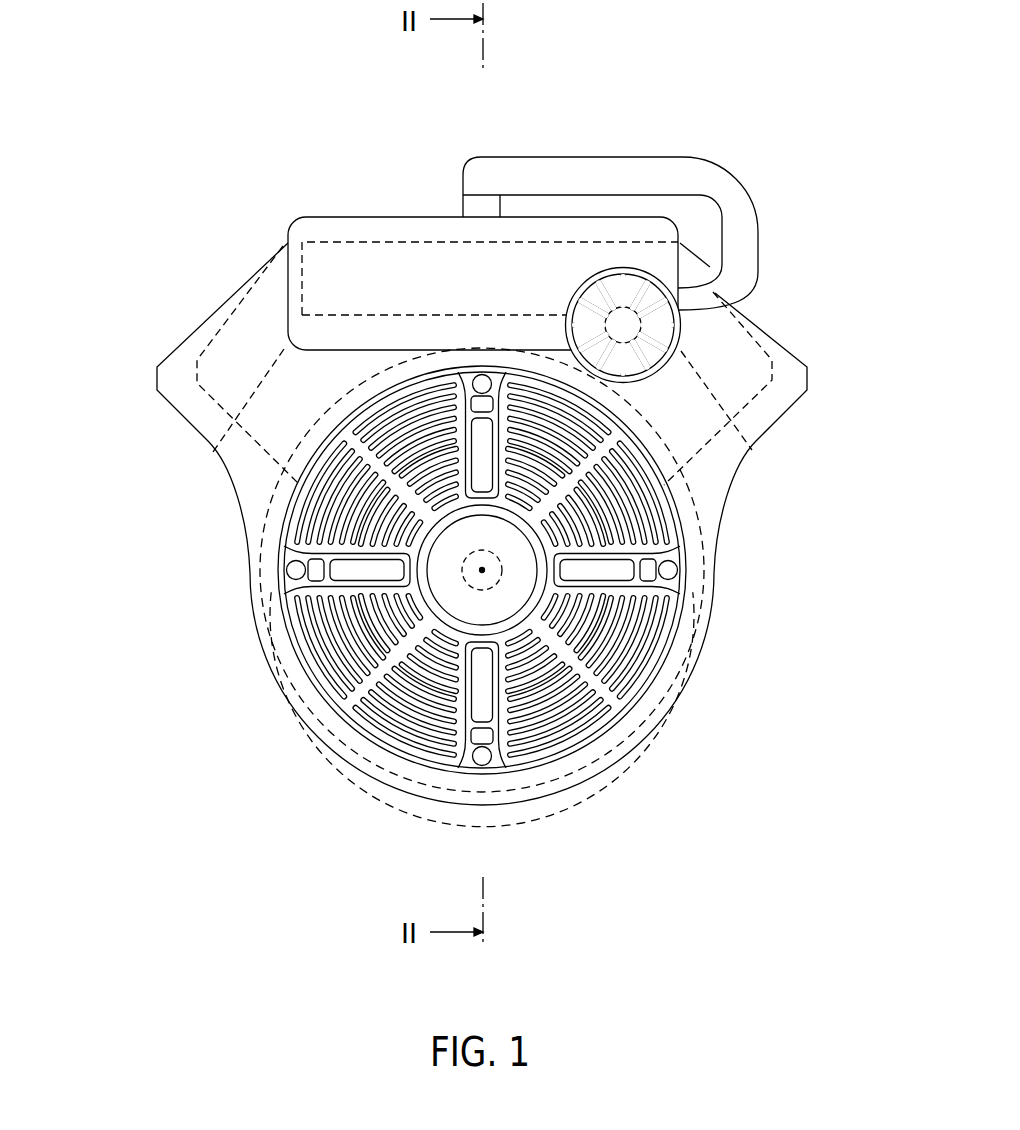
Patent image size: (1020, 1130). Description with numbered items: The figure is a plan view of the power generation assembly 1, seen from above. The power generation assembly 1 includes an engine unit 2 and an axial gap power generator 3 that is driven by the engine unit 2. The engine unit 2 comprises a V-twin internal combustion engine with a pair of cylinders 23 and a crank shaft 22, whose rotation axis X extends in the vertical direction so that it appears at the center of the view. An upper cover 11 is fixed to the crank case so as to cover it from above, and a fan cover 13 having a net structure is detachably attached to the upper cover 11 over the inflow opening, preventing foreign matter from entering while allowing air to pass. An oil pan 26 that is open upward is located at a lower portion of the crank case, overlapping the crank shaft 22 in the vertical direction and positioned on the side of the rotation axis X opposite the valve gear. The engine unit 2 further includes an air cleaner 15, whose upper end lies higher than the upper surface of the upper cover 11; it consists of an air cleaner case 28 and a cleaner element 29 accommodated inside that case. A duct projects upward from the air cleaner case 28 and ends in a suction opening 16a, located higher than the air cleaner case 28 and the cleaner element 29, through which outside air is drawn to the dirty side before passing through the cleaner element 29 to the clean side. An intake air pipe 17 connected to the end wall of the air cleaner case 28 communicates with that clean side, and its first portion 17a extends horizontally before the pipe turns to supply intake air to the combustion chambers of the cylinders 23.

The power generation assembly 1 is at (472, 470).
The engine unit 2 is at (157, 379).
The axial gap power generator 3 is at (466, 605).
The upper cover 11 is at (237, 524).
The fan cover 13 is at (514, 614).
The air cleaner 15 is at (483, 227).
The suction opening 16a is at (684, 277).
The intake air pipe 17 is at (610, 194).
The first portion 17a is at (594, 153).
The crank shaft 22 is at (688, 537).
The cylinders 23 is at (217, 446).
The oil pan 26 is at (307, 730).
The air cleaner case 28 is at (380, 217).
The cleaner element 29 is at (331, 260).
The rotation axis X is at (486, 573).